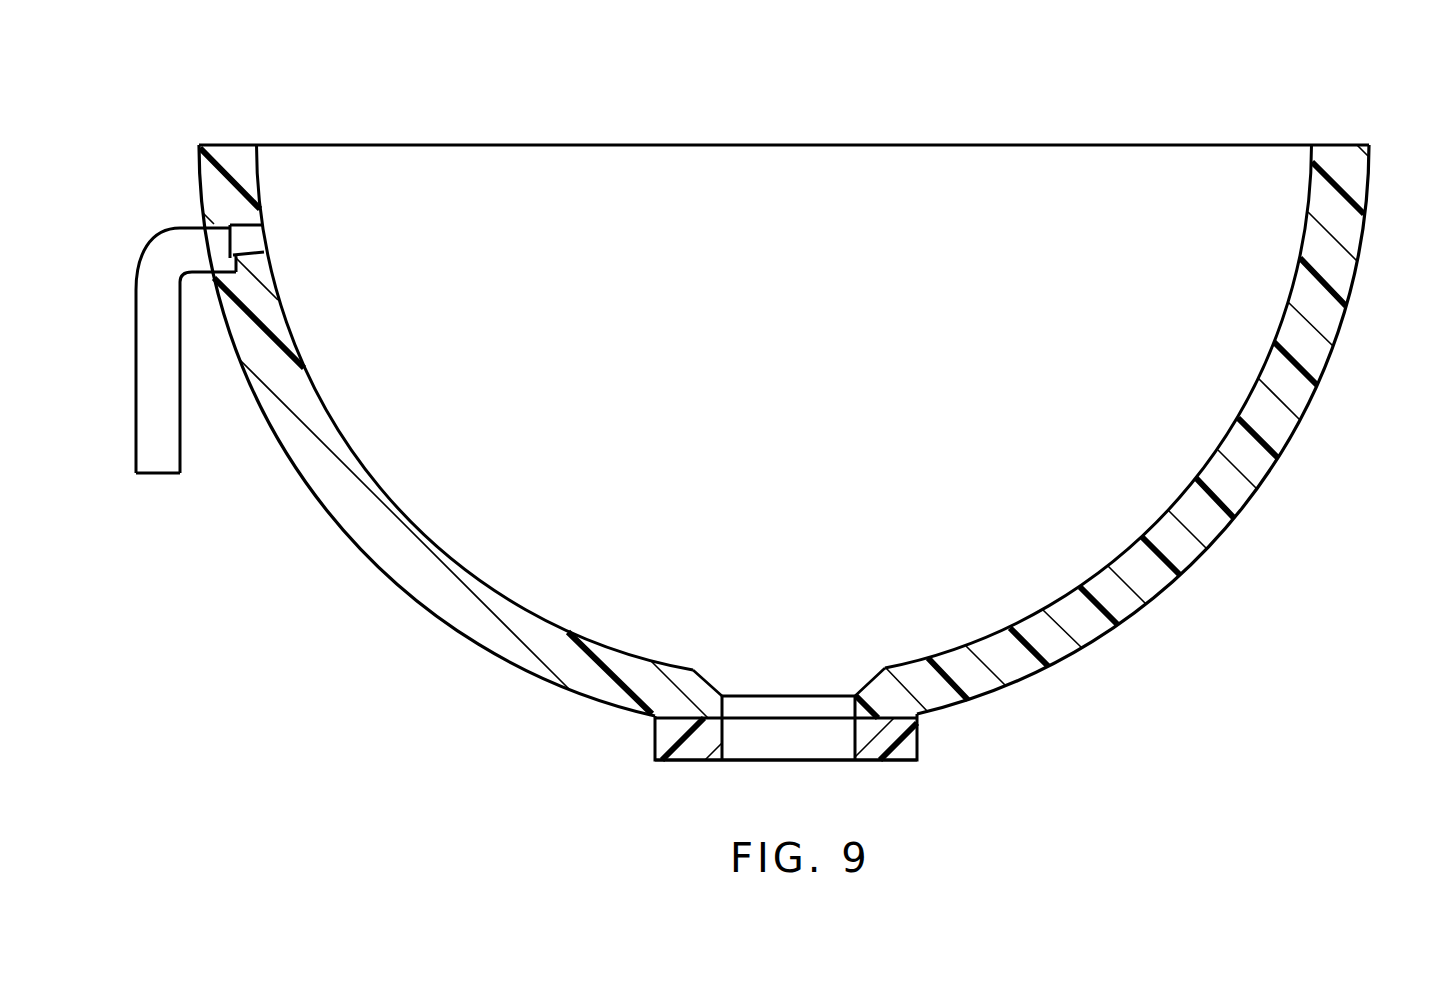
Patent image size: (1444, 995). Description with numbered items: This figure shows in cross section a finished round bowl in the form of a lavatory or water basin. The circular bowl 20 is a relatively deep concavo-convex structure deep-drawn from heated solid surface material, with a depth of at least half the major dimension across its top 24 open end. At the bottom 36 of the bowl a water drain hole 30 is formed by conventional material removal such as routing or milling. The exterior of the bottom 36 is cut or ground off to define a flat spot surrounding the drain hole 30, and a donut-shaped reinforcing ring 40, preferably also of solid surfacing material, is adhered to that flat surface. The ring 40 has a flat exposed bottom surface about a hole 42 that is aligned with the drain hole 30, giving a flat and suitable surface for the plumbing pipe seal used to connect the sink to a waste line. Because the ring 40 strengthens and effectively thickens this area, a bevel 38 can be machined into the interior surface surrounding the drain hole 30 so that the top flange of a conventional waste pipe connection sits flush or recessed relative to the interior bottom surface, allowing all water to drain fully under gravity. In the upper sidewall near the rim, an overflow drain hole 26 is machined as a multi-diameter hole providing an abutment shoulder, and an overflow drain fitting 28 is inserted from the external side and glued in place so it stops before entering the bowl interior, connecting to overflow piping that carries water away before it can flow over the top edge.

The circular bowl 20 is at (1313, 398).
The top open end 24 is at (1345, 143).
The overflow drain hole 26 is at (255, 240).
The overflow drain fitting 28 is at (163, 475).
The water drain hole 30 is at (777, 710).
The bottom of the bowl 36 is at (522, 672).
The bevel 38 is at (865, 680).
The reinforcing ring 40 is at (919, 735).
The hole through the ring 42 is at (803, 747).